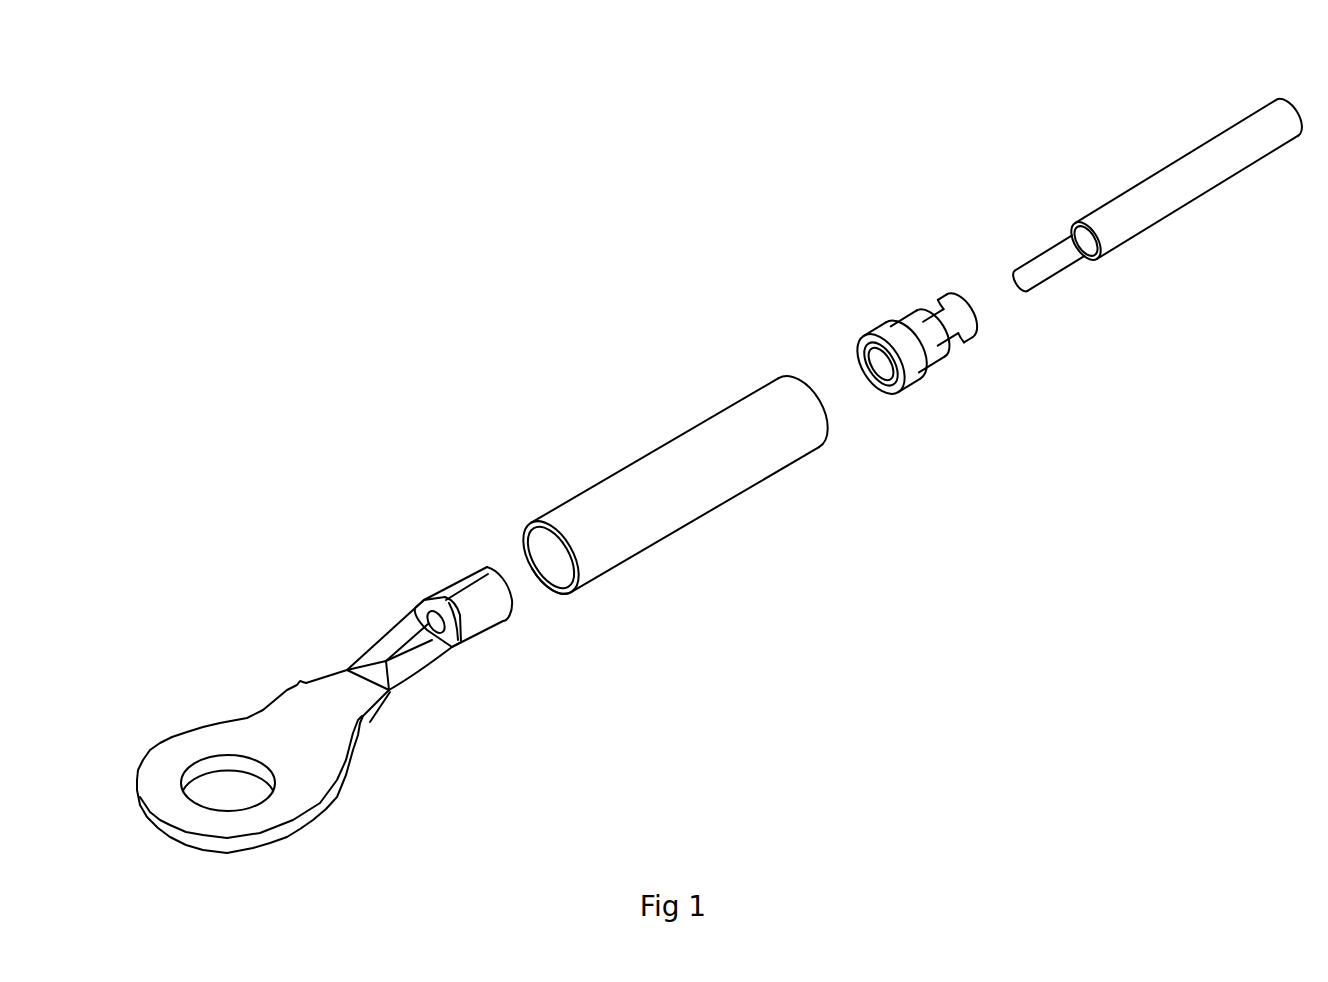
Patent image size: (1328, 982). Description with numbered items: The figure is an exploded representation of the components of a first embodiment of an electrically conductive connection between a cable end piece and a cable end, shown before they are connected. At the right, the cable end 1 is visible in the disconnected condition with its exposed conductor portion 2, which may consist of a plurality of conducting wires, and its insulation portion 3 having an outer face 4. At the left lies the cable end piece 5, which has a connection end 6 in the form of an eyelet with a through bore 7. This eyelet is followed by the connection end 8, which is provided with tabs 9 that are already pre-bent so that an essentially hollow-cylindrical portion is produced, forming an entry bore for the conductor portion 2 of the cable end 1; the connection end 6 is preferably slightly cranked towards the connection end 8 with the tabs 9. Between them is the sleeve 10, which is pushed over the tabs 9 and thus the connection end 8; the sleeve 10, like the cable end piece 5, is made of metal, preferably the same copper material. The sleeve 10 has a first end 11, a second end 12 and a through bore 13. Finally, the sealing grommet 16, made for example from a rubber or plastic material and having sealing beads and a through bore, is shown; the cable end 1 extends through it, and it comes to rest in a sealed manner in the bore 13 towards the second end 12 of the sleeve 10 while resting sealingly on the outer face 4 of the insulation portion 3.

The cable end 1 is at (1099, 152).
The conductor portion 2 is at (1053, 267).
The insulation portion 3 is at (1093, 258).
The outer face 4 is at (1160, 213).
The cable end piece 5 is at (273, 630).
The connection end 6 is at (317, 780).
The through bore 7 is at (200, 773).
The connection end 8 is at (443, 655).
The tabs 9 is at (460, 590).
The sleeve 10 is at (652, 418).
The first end 11 is at (570, 593).
The second end 12 is at (828, 437).
The through bore 13 is at (558, 556).
The sealing grommet 16 is at (903, 290).